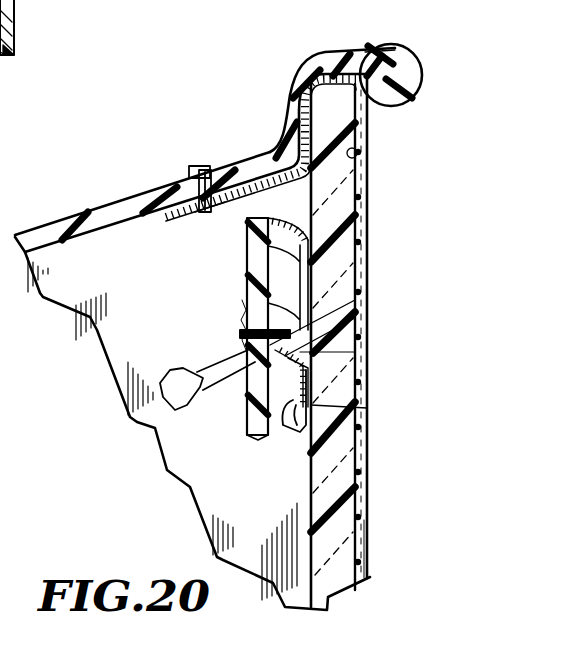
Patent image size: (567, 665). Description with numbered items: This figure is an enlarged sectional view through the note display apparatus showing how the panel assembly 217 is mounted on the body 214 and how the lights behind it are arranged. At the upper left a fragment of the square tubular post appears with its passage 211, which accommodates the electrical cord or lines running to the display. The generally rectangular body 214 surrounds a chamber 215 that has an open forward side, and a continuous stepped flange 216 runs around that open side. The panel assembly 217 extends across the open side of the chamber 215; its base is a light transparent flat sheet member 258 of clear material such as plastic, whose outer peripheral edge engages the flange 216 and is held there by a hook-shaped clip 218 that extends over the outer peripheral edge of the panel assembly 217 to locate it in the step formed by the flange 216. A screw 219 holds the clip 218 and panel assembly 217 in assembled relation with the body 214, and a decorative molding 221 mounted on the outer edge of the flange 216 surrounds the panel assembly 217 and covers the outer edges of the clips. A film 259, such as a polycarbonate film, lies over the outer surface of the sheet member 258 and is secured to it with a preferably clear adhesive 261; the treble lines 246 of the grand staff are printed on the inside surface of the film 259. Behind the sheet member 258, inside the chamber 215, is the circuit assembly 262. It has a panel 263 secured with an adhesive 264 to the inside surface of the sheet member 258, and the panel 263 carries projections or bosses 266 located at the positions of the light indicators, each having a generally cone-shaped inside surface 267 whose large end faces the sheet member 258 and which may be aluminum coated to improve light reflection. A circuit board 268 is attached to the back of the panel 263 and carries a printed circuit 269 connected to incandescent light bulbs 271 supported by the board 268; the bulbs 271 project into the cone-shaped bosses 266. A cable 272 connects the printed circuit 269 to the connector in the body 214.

The passage 211 is at (14, 42).
The body 214 is at (110, 205).
The chamber 215 is at (108, 285).
The stepped flange 216 is at (300, 70).
The panel assembly 217 is at (425, 266).
The hook-shaped clip 218 is at (193, 218).
The screw 219 is at (205, 167).
The decorative molding 221 is at (400, 45).
The treble lines 246 is at (360, 248).
The sheet member 258 is at (350, 465).
The film 259 is at (360, 512).
The adhesive 261 is at (362, 166).
The circuit assembly 262 is at (200, 452).
The panel 263 is at (290, 428).
The adhesive 264 is at (345, 402).
The bosses 266 is at (248, 412).
The cone-shaped inside surface 267 is at (350, 352).
The circuit board 268 is at (243, 437).
The printed circuit 269 is at (243, 317).
The light bulbs 271 is at (350, 318).
The cable 272 is at (165, 380).